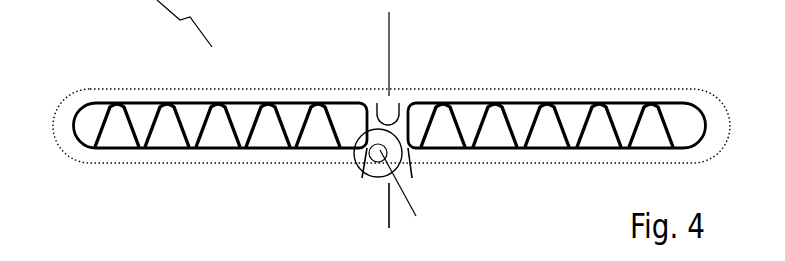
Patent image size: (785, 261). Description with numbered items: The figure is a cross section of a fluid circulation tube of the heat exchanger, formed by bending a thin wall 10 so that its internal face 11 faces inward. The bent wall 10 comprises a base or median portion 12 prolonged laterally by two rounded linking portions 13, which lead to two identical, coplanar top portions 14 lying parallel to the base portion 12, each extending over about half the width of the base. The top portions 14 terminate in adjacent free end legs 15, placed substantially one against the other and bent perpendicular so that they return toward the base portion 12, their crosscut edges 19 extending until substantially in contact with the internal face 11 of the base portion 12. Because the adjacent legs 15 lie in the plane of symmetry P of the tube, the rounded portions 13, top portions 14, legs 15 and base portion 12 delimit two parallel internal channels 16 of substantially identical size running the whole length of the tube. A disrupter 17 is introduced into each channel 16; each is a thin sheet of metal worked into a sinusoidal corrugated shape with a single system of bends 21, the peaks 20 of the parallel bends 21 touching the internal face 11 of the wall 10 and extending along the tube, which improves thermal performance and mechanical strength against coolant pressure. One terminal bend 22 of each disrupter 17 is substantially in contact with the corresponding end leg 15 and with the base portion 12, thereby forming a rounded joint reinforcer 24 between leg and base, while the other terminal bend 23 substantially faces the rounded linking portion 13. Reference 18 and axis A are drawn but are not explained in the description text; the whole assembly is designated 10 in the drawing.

The wall 10 is at (181, 204).
The internal face 11 is at (273, 150).
The base portion 12 is at (482, 188).
The rounded linking portion 13 is at (391, 103).
The top portion 14 is at (573, 88).
The free end leg 15 is at (366, 43).
The internal channel 16 is at (178, 137).
The disrupter 17 is at (351, 124).
The second shell half 18 is at (610, 131).
The crosscut edge 19 is at (377, 178).
The peak 20 is at (300, 123).
The bend 21 is at (445, 136).
The terminal bend 22 is at (336, 22).
The terminal bend 23 is at (85, 188).
The joint reinforcer 24 is at (350, 203).
The plane of symmetry P is at (397, 118).
The actuation axis A is at (401, 193).